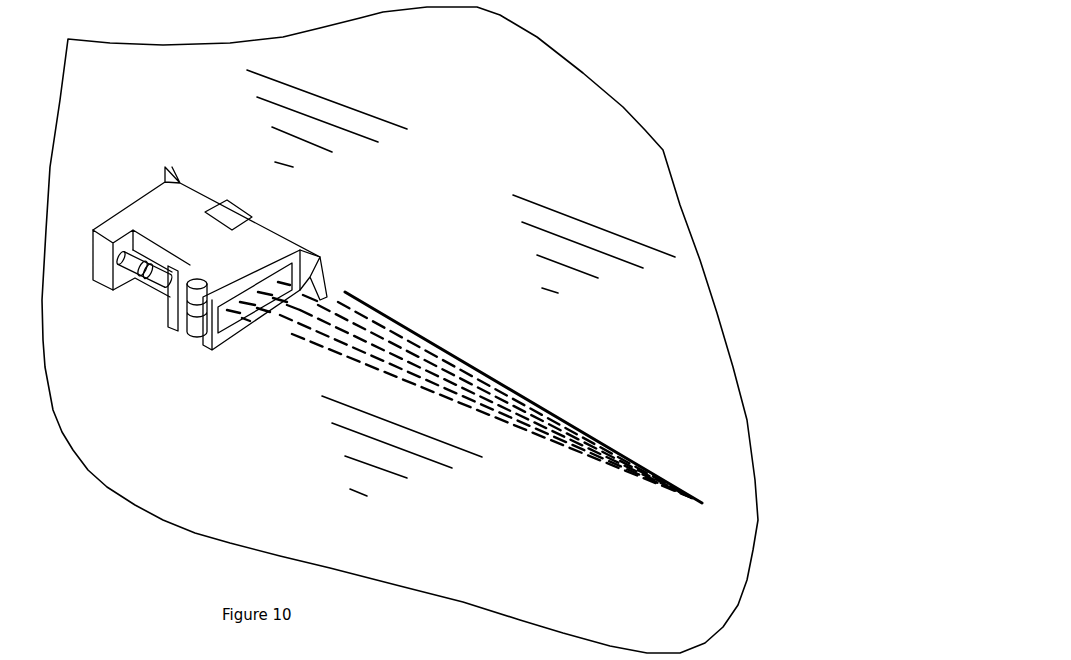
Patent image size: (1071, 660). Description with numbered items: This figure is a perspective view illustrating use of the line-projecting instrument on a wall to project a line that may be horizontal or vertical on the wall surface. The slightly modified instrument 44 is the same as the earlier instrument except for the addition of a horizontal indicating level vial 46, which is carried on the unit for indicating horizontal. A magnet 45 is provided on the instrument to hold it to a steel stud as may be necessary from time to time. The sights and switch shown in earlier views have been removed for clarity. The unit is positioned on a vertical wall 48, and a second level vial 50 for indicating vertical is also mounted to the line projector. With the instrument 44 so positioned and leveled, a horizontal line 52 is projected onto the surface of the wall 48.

The slightly modified instrument 44 is at (138, 95).
The magnet 45 is at (248, 214).
The horizontal indicating level vial 46 is at (151, 287).
The vertical wall 48 is at (627, 108).
The second level vial 50 is at (187, 333).
The horizontal line 52 is at (532, 402).